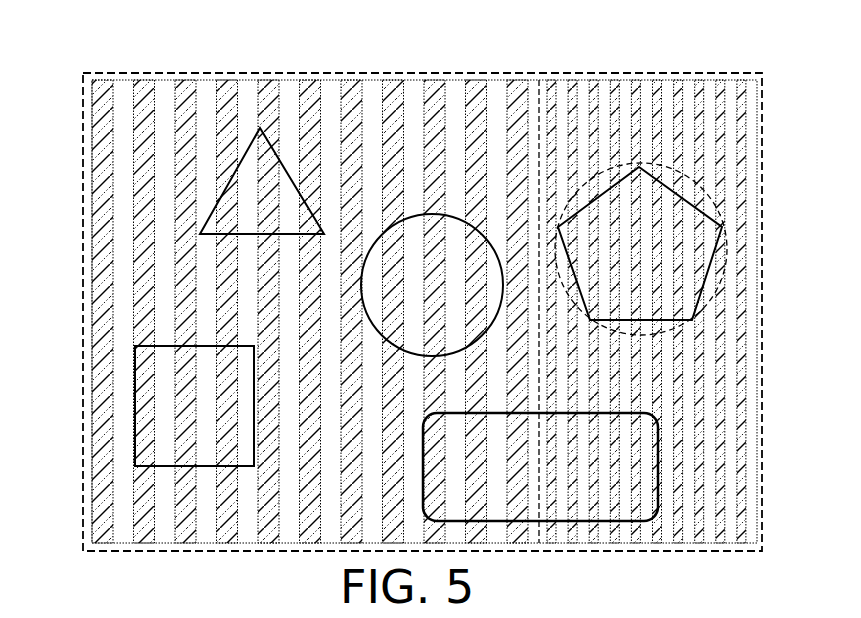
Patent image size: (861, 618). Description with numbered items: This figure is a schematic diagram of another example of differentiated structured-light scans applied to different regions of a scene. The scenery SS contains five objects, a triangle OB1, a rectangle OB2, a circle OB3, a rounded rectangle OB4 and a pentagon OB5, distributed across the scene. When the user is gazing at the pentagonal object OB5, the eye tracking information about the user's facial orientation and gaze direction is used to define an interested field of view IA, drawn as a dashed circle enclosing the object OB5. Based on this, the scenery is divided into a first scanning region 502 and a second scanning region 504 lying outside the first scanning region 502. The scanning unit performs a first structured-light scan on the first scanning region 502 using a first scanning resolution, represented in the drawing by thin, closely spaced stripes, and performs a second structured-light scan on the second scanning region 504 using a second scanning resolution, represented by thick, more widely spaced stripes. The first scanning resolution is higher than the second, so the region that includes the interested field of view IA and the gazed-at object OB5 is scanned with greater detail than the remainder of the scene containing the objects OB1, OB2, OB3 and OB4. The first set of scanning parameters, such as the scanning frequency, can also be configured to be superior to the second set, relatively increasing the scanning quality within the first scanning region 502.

The scenery SS is at (66, 24).
The first scanning region 502 is at (764, 128).
The second scanning region 504 is at (83, 512).
The object OB1 is at (292, 178).
The object OB2 is at (140, 346).
The object OB3 is at (415, 213).
The object OB4 is at (658, 467).
The object OB5 is at (712, 200).
The interested field of view IA is at (712, 297).